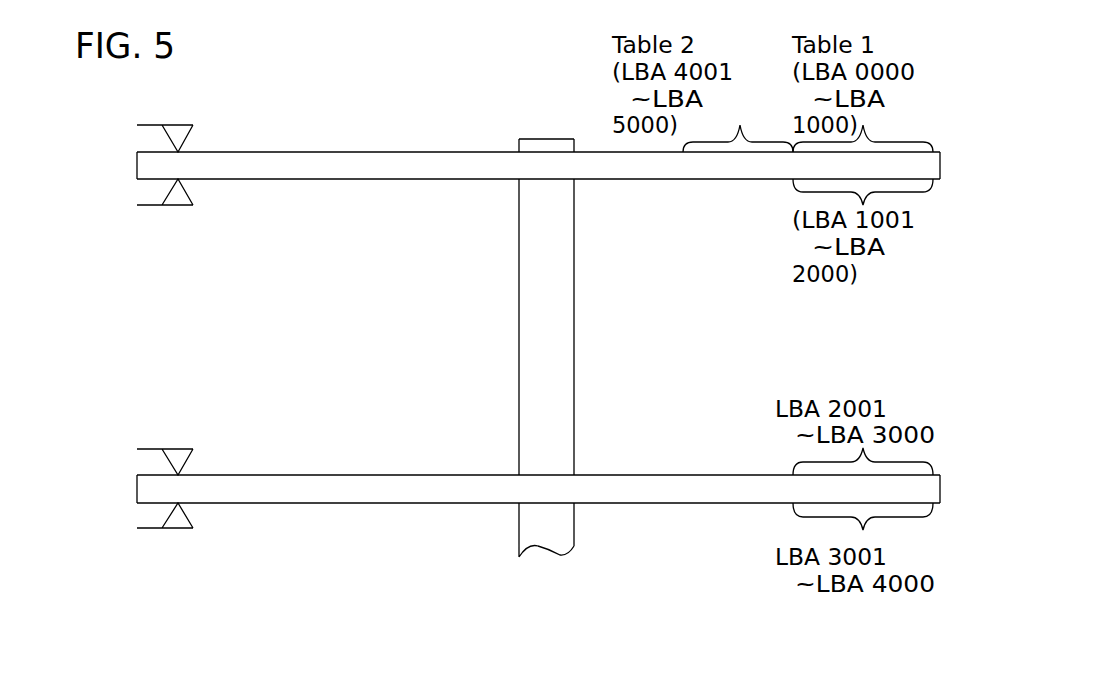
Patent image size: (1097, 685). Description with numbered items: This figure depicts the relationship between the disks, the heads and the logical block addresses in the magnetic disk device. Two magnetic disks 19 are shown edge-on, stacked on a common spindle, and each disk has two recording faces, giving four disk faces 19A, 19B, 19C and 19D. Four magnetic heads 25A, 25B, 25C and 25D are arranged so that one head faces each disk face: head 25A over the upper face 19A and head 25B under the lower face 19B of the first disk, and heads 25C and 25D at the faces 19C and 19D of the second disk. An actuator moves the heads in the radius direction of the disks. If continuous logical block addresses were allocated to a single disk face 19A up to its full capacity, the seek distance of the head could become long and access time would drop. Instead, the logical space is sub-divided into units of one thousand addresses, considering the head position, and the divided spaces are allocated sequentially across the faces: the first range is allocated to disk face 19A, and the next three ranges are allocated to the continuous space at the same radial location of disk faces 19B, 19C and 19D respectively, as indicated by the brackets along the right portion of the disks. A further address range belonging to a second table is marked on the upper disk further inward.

The magnetic disks 19 is at (125, 488).
The disk face 19A is at (303, 152).
The disk face 19B is at (312, 180).
The disk face 19C is at (303, 475).
The disk face 19D is at (312, 503).
The magnetic head 25A is at (180, 125).
The magnetic head 25B is at (183, 203).
The magnetic head 25C is at (187, 452).
The magnetic head 25D is at (183, 527).